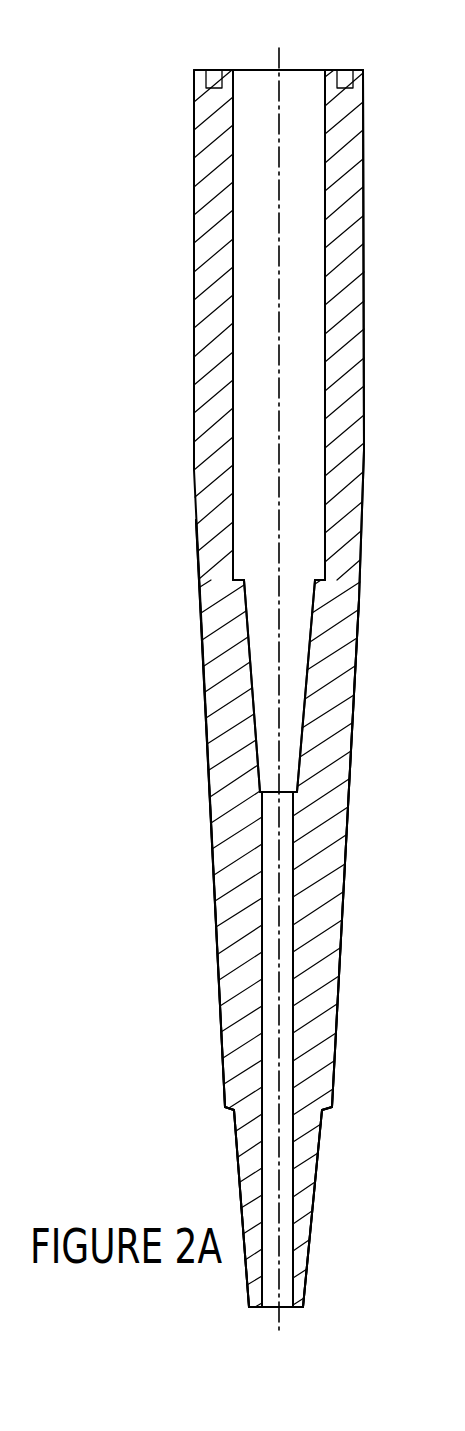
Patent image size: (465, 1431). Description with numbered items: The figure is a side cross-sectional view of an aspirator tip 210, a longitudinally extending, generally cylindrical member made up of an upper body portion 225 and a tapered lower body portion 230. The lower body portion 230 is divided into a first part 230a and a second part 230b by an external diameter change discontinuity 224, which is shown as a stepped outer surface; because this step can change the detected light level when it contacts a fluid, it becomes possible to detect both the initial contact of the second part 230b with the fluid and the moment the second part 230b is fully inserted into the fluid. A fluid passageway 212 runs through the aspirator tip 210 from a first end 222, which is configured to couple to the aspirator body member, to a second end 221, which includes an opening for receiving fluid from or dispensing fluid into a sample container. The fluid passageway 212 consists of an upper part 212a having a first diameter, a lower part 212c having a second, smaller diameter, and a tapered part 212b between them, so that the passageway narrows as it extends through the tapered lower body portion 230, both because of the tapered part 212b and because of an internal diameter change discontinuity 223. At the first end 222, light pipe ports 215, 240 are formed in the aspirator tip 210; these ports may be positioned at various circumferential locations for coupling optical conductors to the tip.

The aspirator tip 210 is at (174, 182).
The fluid passageway 212 is at (258, 333).
The upper part 212a is at (246, 458).
The tapered part 212b is at (260, 666).
The lower part 212c is at (266, 927).
The light pipe port 215 is at (346, 78).
The second end 221 is at (290, 1308).
The first end 222 is at (297, 70).
The internal diameter change discontinuity 223 is at (324, 582).
The external diameter change discontinuity 224 is at (229, 1110).
The upper body portion 225 is at (365, 373).
The lower body portion 230 is at (428, 812).
The first part 230a is at (338, 972).
The second part 230b is at (313, 1231).
The light pipe port 240 is at (211, 78).